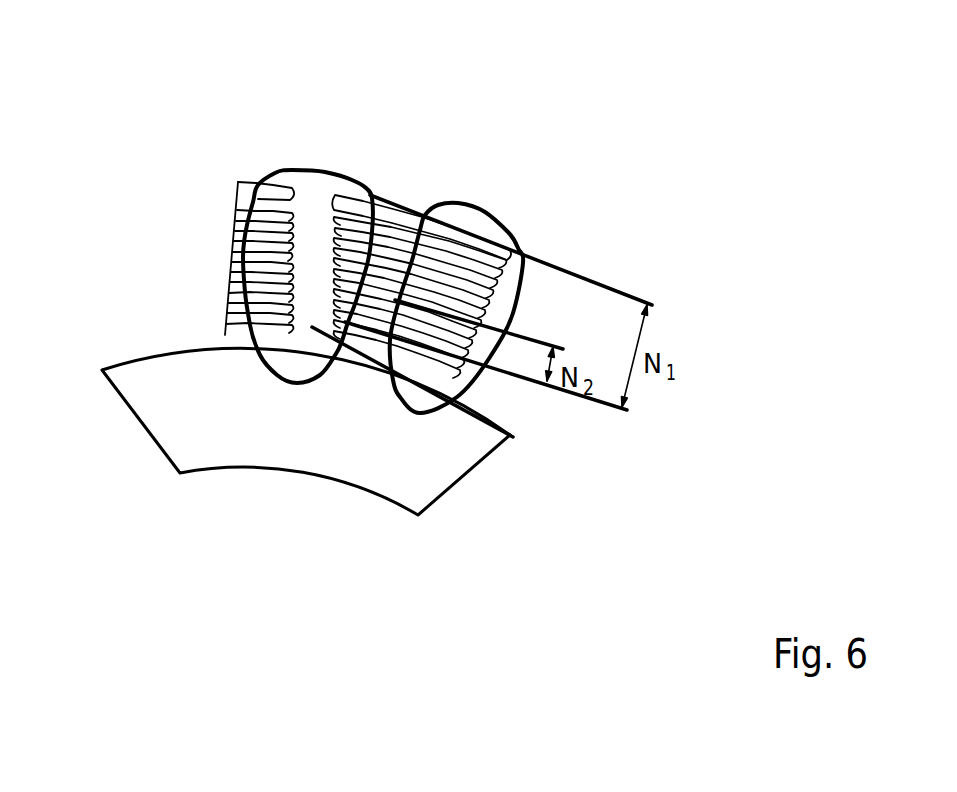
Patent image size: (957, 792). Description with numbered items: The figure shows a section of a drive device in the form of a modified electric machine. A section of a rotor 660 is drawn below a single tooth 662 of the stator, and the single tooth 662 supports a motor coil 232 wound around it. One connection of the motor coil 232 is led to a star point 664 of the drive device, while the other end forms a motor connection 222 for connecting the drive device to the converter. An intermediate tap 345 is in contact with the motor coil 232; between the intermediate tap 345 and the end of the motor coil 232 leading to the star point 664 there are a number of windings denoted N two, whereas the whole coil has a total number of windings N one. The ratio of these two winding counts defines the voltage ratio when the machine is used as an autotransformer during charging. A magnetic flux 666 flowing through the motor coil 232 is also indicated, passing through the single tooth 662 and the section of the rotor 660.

The rotor 660 is at (467, 480).
The single tooth 662 is at (471, 204).
The motor coil 232 is at (500, 298).
The motor connection 222 is at (568, 278).
The star point 664 is at (518, 337).
The intermediate tap 345 is at (547, 387).
The magnetic flux 666 is at (407, 410).